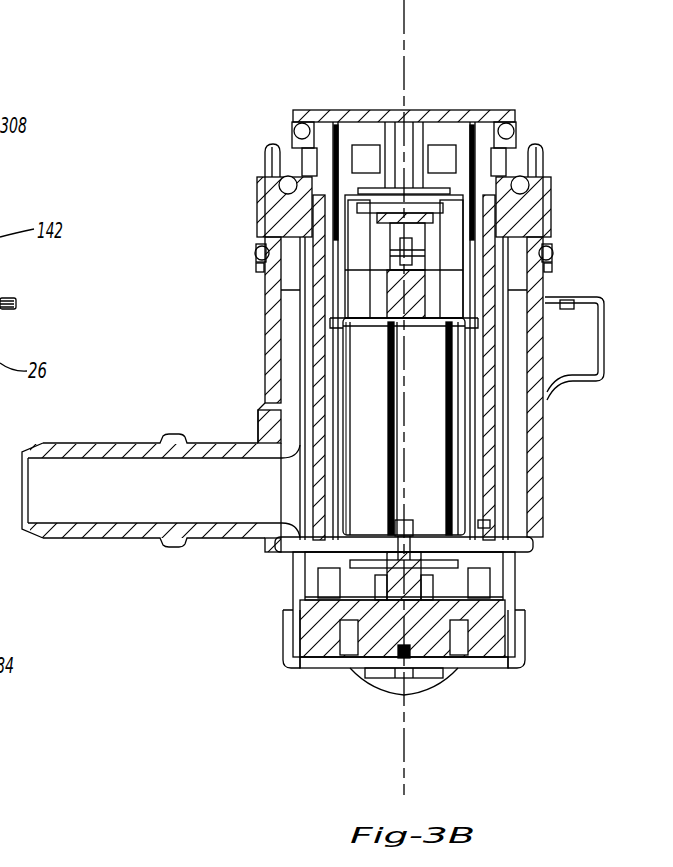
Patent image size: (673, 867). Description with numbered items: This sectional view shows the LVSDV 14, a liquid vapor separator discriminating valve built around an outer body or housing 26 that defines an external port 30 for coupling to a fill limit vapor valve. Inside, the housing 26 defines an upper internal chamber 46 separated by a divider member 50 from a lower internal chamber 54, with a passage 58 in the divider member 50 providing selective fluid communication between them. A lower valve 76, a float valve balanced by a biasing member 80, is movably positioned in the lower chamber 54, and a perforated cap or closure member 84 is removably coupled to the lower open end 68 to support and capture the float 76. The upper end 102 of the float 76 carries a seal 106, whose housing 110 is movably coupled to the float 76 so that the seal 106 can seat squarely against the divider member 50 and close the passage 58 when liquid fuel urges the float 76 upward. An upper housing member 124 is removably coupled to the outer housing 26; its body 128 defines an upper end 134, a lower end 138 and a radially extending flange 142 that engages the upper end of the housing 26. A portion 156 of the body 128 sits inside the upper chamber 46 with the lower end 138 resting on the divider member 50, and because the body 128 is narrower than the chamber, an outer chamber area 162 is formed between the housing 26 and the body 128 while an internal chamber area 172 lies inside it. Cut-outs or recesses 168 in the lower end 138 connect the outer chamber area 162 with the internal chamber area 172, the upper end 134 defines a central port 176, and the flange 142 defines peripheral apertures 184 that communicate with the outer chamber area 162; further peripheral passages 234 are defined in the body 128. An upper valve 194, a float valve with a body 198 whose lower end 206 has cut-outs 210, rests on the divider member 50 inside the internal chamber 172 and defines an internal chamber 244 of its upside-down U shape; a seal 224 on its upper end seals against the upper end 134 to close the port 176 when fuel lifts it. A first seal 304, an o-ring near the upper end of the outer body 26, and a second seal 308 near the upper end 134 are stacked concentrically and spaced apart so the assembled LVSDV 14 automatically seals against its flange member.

The LVSDV 14 is at (239, 93).
The outer body or housing 26 is at (545, 450).
The external port 30 is at (118, 443).
The upper internal chamber 46 is at (515, 413).
The divider member 50 is at (335, 546).
The lower internal chamber 54 is at (478, 553).
The passage 58 is at (478, 588).
The lower open end 68 is at (492, 645).
The lower valve 76 is at (393, 652).
The biasing member 80 is at (395, 665).
The cap or closure member 84 is at (462, 688).
The upper end or side of the float 102 is at (473, 570).
The seal 106 is at (332, 577).
The housing 110 is at (345, 588).
The upper housing member 124 is at (497, 296).
The body 128 is at (487, 312).
The upper end 134 is at (330, 110).
The lower end 138 is at (500, 522).
The radially extending flange 142 is at (540, 178).
The portion of the body 156 is at (300, 355).
The outer chamber area 162 is at (300, 318).
The cut-outs or recesses 168 is at (292, 520).
The internal chamber area 172 is at (307, 268).
The central opening or port 176 is at (420, 112).
The peripheral apertures or passages 184 is at (527, 258).
The upper valve 194 is at (550, 389).
The body 198 is at (345, 408).
The lower end 206 is at (455, 515).
The cut-outs or recesses 210 is at (392, 520).
The seal 224 is at (378, 188).
The peripheral passages 234 is at (455, 160).
The internal chamber 244 is at (434, 406).
The first seal 304 is at (256, 252).
The second seal 308 is at (293, 131).